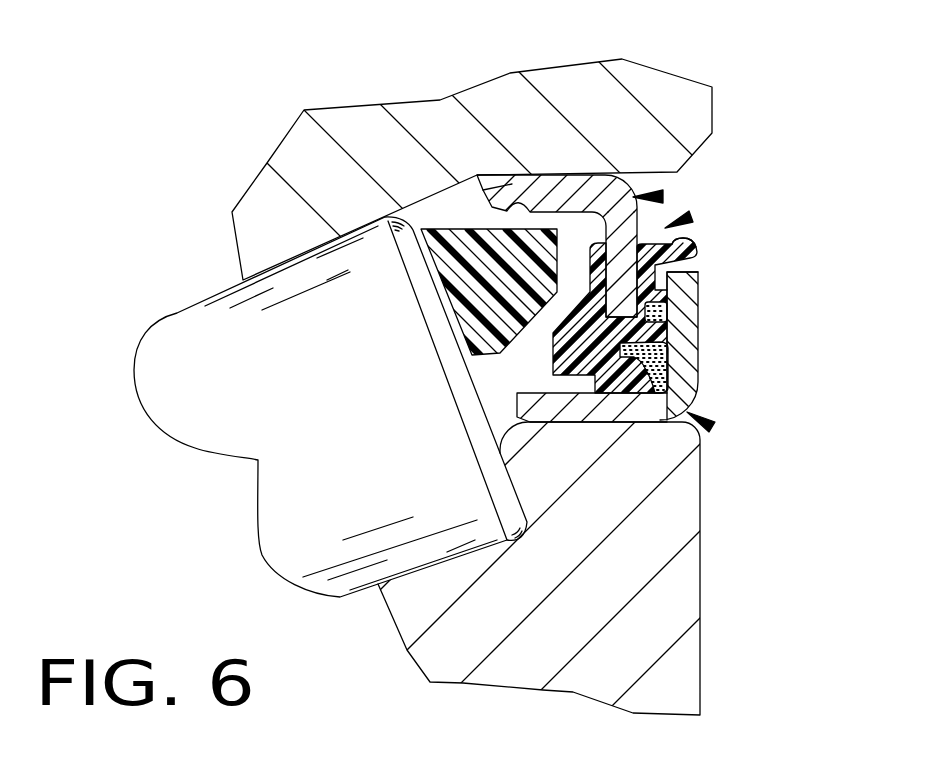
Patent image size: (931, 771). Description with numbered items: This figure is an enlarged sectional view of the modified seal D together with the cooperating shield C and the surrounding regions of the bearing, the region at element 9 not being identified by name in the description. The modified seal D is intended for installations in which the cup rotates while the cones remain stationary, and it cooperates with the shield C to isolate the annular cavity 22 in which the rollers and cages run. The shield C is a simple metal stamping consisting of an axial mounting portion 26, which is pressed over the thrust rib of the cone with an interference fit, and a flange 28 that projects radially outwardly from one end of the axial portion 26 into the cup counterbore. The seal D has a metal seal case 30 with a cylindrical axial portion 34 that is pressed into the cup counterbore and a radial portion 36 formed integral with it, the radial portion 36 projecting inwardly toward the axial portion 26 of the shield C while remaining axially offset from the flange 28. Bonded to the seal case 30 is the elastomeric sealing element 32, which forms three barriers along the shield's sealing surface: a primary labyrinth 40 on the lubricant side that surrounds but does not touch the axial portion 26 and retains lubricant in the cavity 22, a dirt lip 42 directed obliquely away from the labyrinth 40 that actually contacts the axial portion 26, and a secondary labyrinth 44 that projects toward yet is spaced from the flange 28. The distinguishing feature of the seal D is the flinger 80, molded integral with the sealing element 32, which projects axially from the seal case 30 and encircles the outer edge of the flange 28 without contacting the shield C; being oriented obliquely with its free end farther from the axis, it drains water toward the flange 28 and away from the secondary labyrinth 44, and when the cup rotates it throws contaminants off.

The annular cavity 22 is at (455, 207).
The axial portion 34 is at (555, 193).
The radial portion 36 is at (627, 217).
The elastomeric sealing element 32 is at (560, 305).
The primary labyrinth 40 is at (568, 363).
The dirt lip 42 is at (647, 387).
The flinger 80 is at (697, 248).
The secondary labyrinth 44 is at (687, 280).
The flange 28 is at (690, 327).
The axial mounting portion 26 is at (587, 412).
The seal assembly 9 is at (665, 355).
The seal case 30 is at (663, 195).
The modified seal D is at (697, 215).
The shield C is at (712, 428).